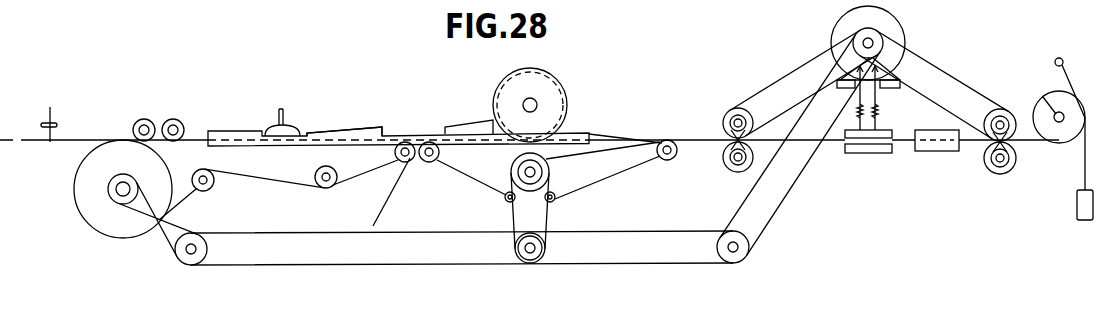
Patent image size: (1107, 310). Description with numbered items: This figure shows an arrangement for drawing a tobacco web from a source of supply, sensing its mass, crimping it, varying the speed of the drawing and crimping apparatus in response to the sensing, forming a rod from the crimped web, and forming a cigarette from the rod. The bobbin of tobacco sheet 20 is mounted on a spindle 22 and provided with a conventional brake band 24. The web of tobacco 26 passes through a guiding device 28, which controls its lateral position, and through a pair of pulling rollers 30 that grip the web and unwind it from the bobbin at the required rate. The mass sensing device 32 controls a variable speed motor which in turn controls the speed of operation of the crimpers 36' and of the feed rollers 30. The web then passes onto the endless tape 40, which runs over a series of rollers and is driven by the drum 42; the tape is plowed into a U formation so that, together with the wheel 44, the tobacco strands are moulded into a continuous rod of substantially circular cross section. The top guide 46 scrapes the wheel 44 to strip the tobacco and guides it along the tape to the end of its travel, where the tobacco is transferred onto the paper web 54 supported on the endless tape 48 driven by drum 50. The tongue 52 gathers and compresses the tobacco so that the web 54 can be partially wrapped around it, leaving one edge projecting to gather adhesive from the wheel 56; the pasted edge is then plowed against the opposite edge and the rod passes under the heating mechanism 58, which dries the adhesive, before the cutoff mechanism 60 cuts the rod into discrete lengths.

The bobbin of tobacco sheet 20 is at (1057, 93).
The spindle 22 is at (1044, 106).
The brake band 24 is at (1083, 177).
The web of tobacco 26 is at (1027, 146).
The guiding device 28 is at (925, 156).
The pulling rollers 30 is at (1003, 108).
The mass sensing device 32 is at (866, 155).
The crimpers 36' is at (719, 133).
The endless tape 40 is at (590, 191).
The drum 42 is at (546, 166).
The wheel 44 is at (560, 81).
The top guide 46 is at (478, 124).
The endless tape 48 is at (261, 184).
The drum 50 is at (95, 222).
The tongue 52 is at (371, 121).
The paper web 54 is at (382, 213).
The wheel 56 is at (296, 117).
The heating mechanism 58 is at (181, 119).
The cutoff mechanism 60 is at (52, 112).